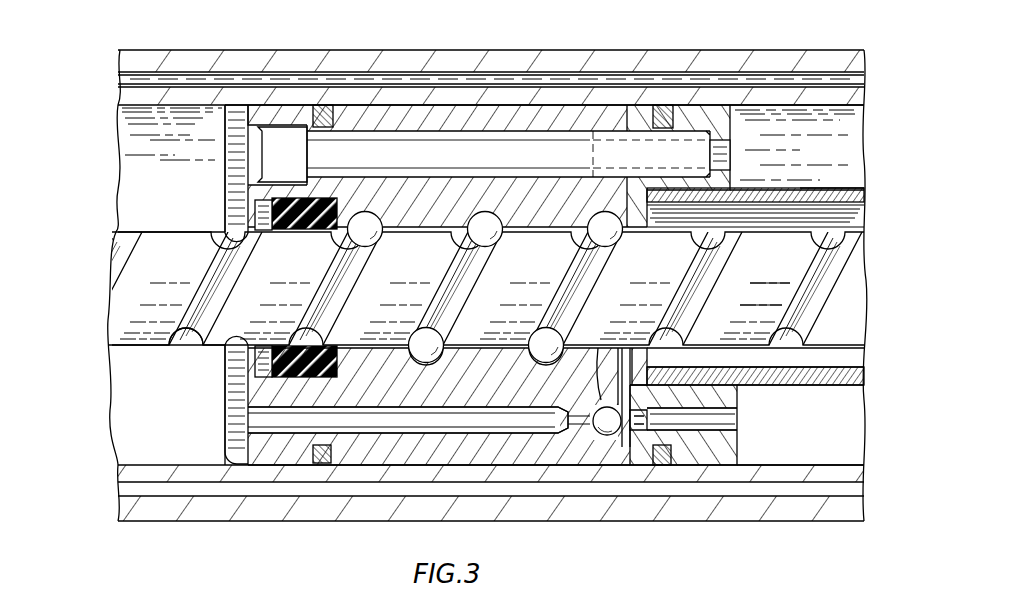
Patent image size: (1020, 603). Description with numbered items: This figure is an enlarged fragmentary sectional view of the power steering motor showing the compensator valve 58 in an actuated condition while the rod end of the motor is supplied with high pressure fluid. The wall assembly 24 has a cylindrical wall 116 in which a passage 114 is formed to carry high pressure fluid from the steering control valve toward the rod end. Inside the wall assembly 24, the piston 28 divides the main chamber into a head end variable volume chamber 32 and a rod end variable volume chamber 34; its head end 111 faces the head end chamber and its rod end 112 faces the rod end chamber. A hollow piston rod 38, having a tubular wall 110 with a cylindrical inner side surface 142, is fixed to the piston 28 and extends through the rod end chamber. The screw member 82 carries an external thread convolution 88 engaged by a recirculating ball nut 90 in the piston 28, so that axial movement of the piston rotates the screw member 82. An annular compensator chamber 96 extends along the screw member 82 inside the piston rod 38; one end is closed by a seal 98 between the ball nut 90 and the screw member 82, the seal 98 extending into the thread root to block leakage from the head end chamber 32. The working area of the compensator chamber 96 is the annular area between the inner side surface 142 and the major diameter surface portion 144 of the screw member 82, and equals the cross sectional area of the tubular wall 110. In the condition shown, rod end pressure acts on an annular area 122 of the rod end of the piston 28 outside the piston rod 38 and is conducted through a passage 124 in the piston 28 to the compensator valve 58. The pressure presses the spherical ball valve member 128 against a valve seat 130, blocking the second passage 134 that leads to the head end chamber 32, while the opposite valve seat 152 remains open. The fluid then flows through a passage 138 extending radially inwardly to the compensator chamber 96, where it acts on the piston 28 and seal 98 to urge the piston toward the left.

The wall assembly 24 is at (737, 13).
The passage 114 is at (197, 80).
The cylindrical wall 116 is at (321, 100).
The piston 28 is at (447, 103).
The rod end 112 is at (735, 127).
The piston rod 38 is at (822, 194).
The tubular wall 110 is at (864, 192).
The cylindrical inner side surface 142 is at (864, 221).
The major diameter surface portion 144 is at (768, 220).
The compensator chamber 96 is at (850, 357).
The rod end variable volume chamber 34 is at (848, 446).
The passage 124 is at (718, 418).
The passage 138 is at (648, 364).
The ball valve member 128 is at (598, 396).
The screw member 82 is at (106, 331).
The external thread convolution 88 is at (187, 338).
The seal 98 is at (273, 357).
The head end variable volume chamber 32 is at (125, 428).
The head end 111 is at (223, 175).
The recirculating ball nut 90 is at (395, 357).
The second passage 134 is at (503, 423).
The valve seat 130 is at (610, 441).
The compensator valve 58 is at (620, 436).
The valve seat 152 is at (652, 431).
The annular area 122 is at (733, 447).